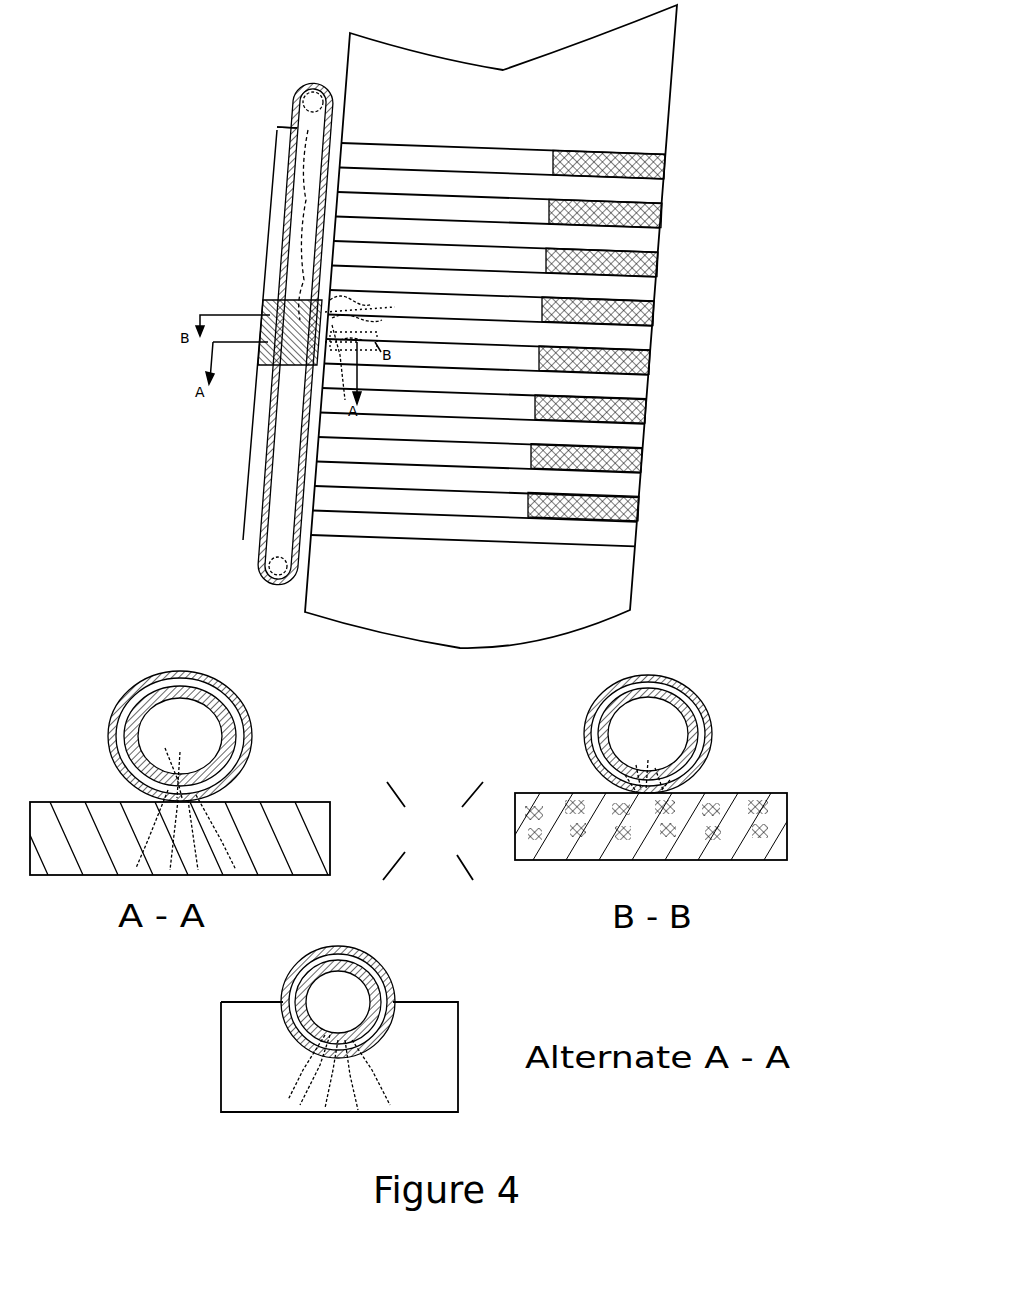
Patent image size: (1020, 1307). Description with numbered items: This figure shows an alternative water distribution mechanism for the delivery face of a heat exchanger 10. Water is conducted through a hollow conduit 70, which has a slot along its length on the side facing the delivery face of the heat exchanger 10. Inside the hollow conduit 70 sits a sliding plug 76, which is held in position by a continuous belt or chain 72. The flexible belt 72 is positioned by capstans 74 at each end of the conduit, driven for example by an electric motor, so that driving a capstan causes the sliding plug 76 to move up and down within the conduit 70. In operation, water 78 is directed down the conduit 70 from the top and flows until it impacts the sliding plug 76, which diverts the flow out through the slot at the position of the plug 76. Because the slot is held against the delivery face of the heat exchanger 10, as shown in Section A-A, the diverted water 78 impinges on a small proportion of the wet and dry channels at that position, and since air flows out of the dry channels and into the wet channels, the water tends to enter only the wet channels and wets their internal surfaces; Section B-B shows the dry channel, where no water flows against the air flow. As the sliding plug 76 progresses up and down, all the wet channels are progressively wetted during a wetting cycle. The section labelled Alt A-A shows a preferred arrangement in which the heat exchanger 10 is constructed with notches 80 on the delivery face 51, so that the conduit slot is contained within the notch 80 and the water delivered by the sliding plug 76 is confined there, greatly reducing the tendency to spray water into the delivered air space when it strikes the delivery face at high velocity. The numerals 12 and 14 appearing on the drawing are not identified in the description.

The heat exchanger 10 is at (433, 831).
The second substrate 12 is at (523, 190).
The first substrate 14 is at (493, 158).
The delivery face 51 is at (400, 1000).
The hollow conduit 70 is at (271, 210).
The continuous belt or chain 72 is at (277, 127).
The capstans 74 is at (293, 93).
The sliding plug 76 is at (267, 310).
The water 78 is at (295, 160).
The notches 80 is at (290, 1030).